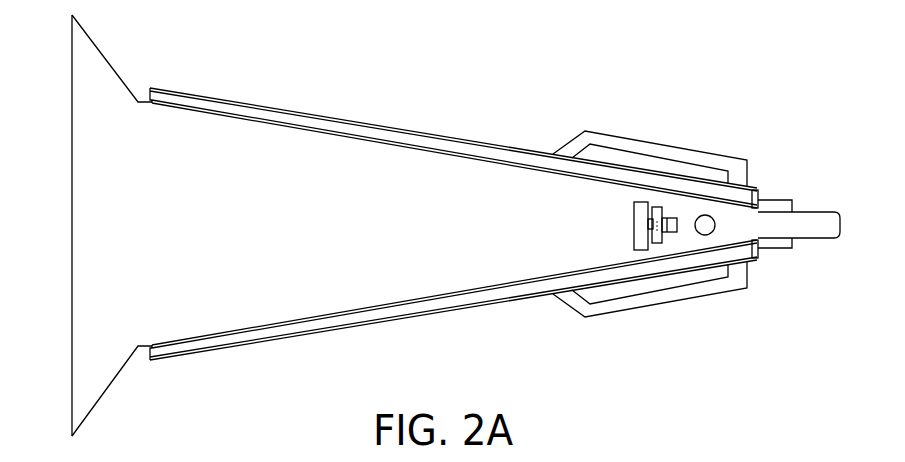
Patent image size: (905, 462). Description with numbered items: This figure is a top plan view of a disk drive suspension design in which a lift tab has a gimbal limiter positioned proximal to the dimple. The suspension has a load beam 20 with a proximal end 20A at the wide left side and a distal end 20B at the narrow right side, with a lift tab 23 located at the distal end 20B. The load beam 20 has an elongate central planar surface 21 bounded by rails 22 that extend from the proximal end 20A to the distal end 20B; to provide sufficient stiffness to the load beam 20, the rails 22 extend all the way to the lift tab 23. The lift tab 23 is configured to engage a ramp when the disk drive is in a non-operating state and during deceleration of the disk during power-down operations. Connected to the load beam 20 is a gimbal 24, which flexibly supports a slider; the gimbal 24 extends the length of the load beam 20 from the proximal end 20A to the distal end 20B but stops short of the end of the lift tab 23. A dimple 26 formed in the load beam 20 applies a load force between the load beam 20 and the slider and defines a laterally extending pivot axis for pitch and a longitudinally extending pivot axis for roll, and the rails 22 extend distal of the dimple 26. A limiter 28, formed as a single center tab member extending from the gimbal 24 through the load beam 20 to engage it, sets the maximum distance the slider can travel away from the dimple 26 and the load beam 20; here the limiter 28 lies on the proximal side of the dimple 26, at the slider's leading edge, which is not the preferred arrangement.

The load beam 20 is at (394, 118).
The proximal end 20A is at (66, 231).
The distal end 20B is at (811, 204).
The elongate central planar surface 21 is at (259, 220).
The rails 22 is at (273, 106).
The lift tab 23 is at (838, 241).
The gimbal 24 is at (598, 131).
The dimple 26 is at (706, 215).
The limiter 28 is at (657, 244).